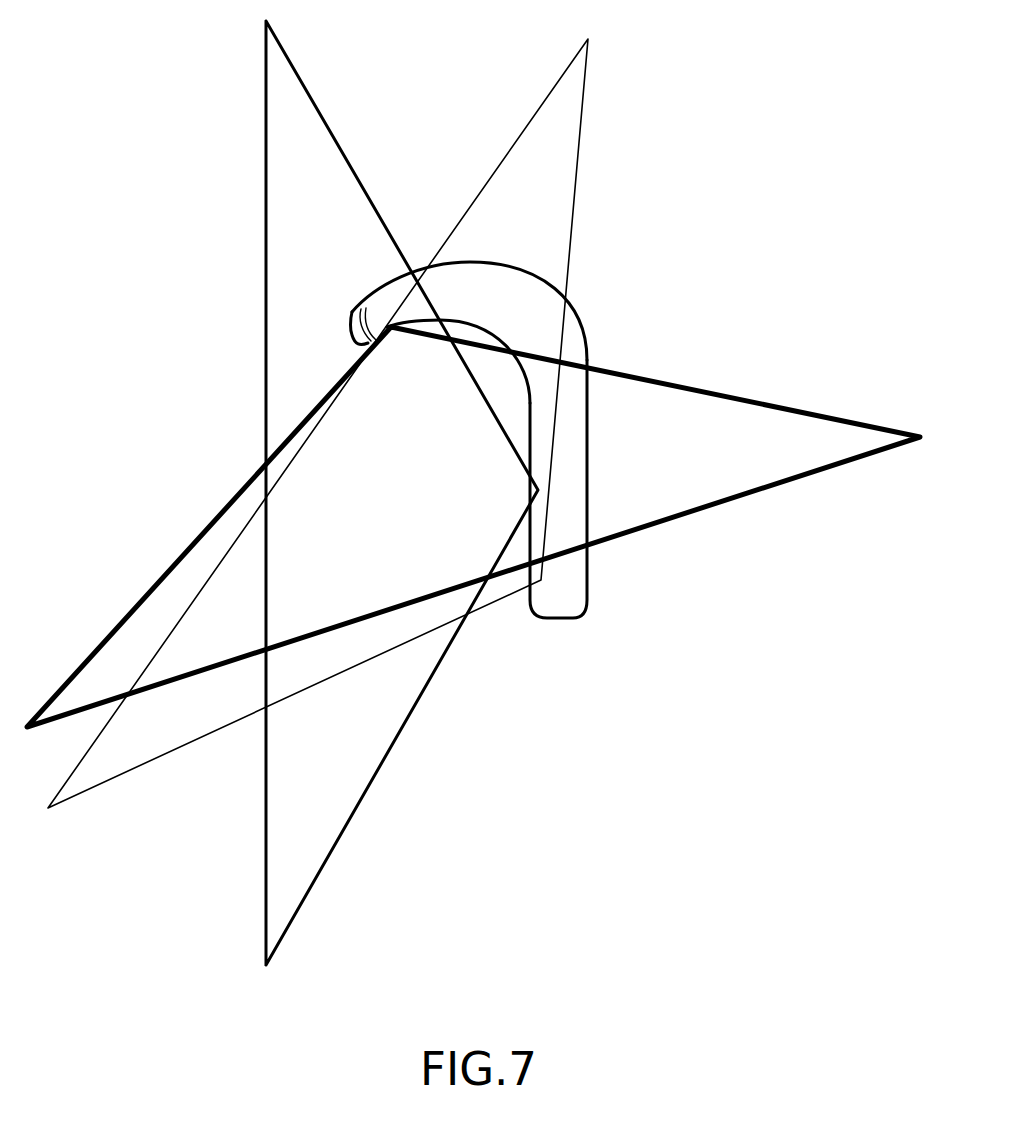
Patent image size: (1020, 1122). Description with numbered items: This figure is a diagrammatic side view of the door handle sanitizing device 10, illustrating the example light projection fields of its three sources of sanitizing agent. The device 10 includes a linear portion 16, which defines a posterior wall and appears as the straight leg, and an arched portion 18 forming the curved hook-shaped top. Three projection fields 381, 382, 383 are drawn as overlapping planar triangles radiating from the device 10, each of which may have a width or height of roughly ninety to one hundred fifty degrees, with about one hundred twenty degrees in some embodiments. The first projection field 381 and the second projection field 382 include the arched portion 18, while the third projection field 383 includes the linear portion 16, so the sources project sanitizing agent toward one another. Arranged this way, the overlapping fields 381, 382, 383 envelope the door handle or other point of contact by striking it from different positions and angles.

The door handle sanitizing device 10 is at (498, 406).
The linear portion 16 is at (577, 497).
The arched portion 18 is at (502, 273).
The first projection field 381 is at (463, 215).
The second projection field 382 is at (266, 287).
The third projection field 383 is at (750, 397).